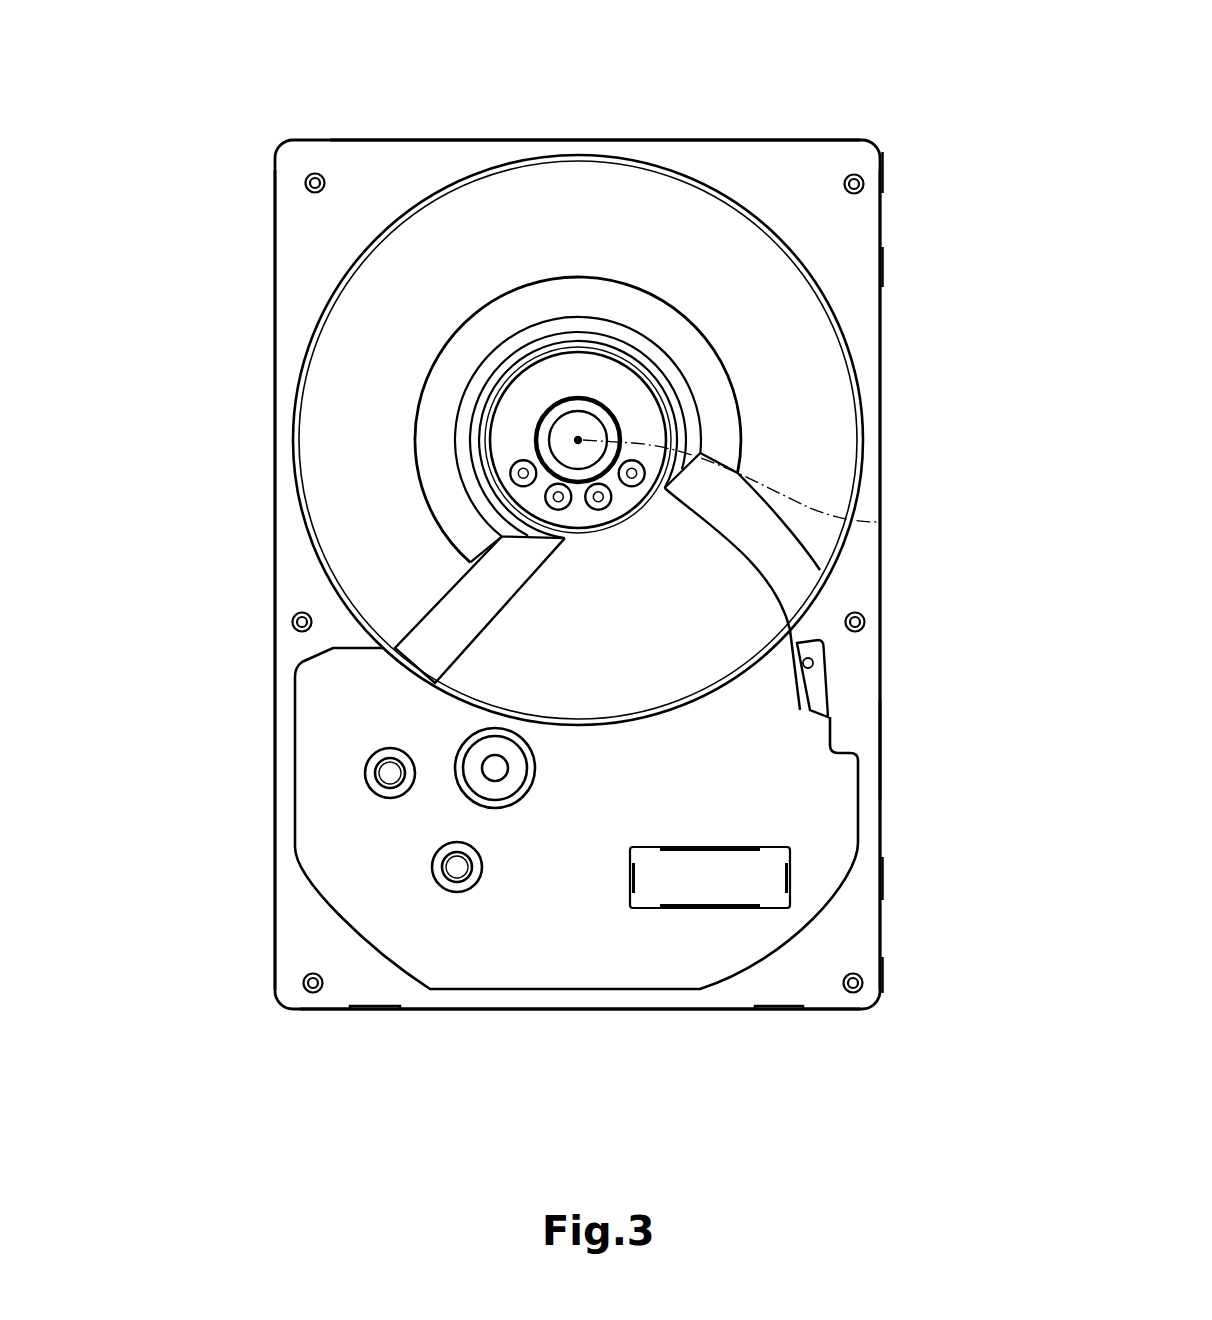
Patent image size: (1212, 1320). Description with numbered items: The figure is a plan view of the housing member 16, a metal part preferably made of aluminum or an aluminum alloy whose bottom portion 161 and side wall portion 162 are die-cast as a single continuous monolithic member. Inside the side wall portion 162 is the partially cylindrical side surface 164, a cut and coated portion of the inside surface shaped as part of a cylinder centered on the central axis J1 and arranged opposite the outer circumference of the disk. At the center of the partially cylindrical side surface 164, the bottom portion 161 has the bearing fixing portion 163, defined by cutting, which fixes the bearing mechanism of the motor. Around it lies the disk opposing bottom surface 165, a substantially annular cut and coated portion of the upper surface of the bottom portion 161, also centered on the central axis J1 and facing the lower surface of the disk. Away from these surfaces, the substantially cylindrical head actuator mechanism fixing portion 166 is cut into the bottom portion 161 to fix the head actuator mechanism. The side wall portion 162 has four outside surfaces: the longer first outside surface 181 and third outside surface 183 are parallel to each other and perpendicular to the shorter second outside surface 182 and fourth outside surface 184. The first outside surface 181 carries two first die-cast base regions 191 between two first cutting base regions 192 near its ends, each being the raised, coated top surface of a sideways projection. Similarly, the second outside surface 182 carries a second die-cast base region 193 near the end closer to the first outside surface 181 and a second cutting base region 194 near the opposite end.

The housing member 16 is at (318, 115).
The bottom portion 161 is at (807, 812).
The side wall portion 162 is at (876, 790).
The bearing fixing portion 163 is at (603, 426).
The partially cylindrical side surface 164 is at (843, 421).
The disk opposing bottom surface 165 is at (822, 467).
The head actuator mechanism fixing portion 166 is at (475, 763).
The first outside surface 181 is at (885, 717).
The second outside surface 182 is at (547, 1013).
The third outside surface 183 is at (273, 717).
The fourth outside surface 184 is at (547, 138).
The first die-cast base region 191 is at (883, 270).
The first cutting base region 192 is at (883, 168).
The second die-cast base region 193 is at (780, 1012).
The second cutting base region 194 is at (375, 1012).
The central axis J1 is at (880, 522).